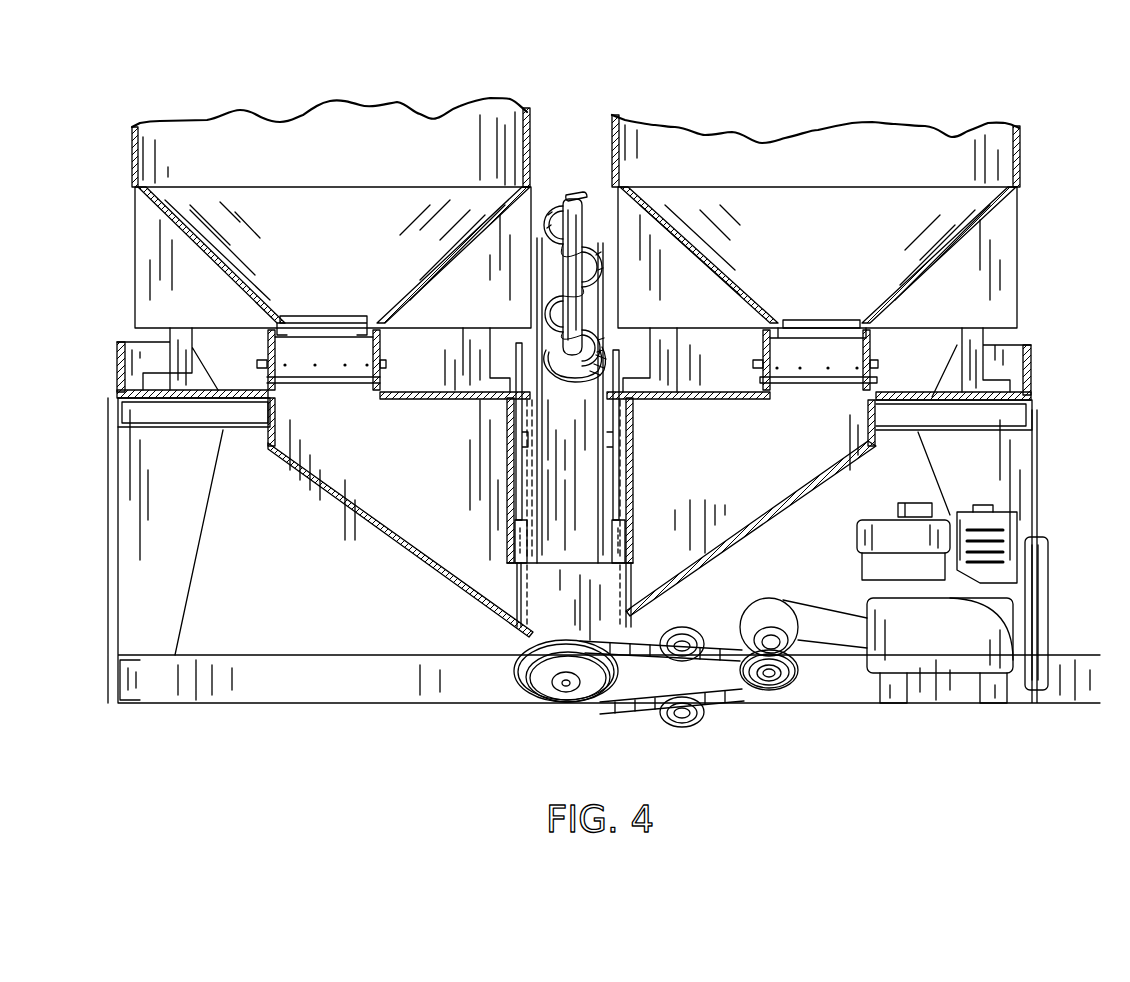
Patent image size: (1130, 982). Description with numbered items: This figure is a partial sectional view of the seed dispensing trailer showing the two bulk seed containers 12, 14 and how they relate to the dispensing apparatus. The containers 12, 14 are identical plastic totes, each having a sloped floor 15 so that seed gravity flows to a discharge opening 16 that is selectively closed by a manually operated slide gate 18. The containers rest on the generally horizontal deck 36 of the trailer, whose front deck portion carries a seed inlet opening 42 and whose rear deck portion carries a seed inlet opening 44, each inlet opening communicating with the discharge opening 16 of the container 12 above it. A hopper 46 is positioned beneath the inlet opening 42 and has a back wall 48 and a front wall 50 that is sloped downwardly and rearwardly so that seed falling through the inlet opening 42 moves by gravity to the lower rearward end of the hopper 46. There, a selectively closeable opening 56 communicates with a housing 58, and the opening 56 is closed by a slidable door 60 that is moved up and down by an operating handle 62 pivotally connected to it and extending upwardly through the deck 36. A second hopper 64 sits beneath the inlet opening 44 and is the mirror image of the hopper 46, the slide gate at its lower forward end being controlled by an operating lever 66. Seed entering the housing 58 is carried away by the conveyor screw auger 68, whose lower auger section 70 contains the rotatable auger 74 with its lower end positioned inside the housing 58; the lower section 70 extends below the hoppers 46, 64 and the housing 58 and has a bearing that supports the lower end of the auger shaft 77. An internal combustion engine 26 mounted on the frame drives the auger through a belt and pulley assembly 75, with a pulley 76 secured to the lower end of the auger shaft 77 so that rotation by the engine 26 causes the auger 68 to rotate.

The bulk seed container 12 is at (968, 118).
The bulk seed container 14 is at (466, 97).
The sloped floor 15 is at (443, 247).
The discharge opening 16 is at (345, 312).
The slide gate 18 is at (318, 302).
The internal combustion engine 26 is at (973, 627).
The deck 36 is at (752, 410).
The seed inlet opening 42 is at (872, 362).
The seed inlet opening 44 is at (263, 382).
The hopper 46 is at (812, 471).
The back wall 48 is at (632, 470).
The front wall 50 is at (748, 538).
The selectively closeable opening 56 is at (632, 438).
The housing 58 is at (596, 595).
The slidable door 60 is at (618, 505).
The operating handle 62 is at (613, 348).
The hopper 64 is at (362, 526).
The operating lever 66 is at (513, 357).
The conveyor screw auger 68 is at (574, 198).
The lower auger section 70 is at (604, 303).
The rotatable auger 74 is at (603, 248).
The belt and pulley assembly 75 is at (637, 716).
The pulley 76 is at (533, 703).
The auger shaft 77 is at (584, 211).